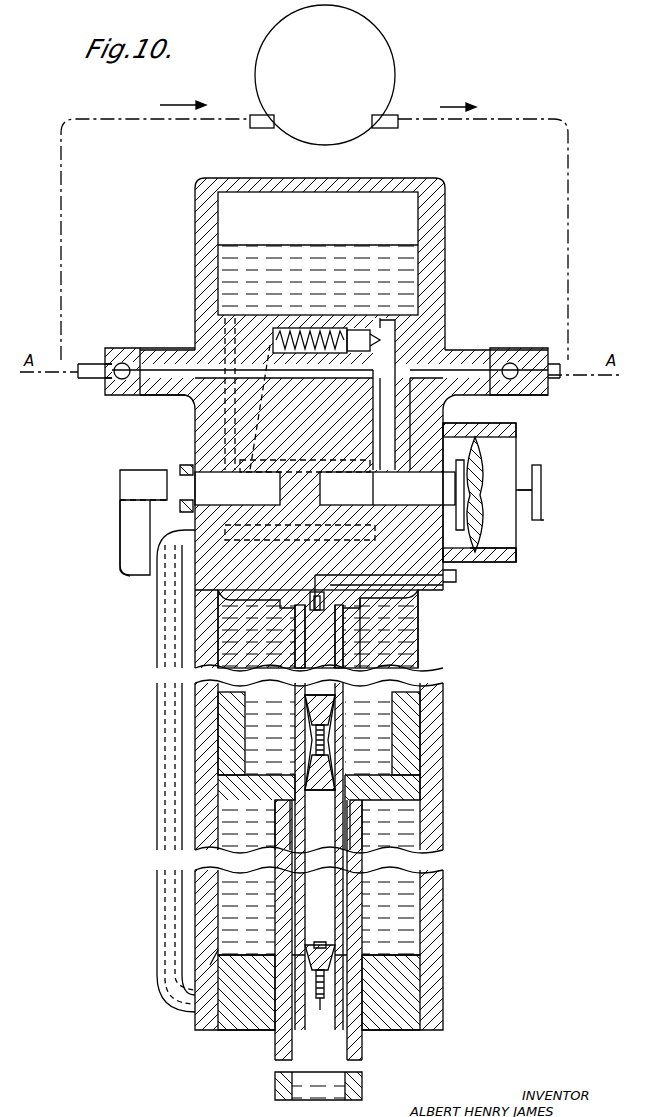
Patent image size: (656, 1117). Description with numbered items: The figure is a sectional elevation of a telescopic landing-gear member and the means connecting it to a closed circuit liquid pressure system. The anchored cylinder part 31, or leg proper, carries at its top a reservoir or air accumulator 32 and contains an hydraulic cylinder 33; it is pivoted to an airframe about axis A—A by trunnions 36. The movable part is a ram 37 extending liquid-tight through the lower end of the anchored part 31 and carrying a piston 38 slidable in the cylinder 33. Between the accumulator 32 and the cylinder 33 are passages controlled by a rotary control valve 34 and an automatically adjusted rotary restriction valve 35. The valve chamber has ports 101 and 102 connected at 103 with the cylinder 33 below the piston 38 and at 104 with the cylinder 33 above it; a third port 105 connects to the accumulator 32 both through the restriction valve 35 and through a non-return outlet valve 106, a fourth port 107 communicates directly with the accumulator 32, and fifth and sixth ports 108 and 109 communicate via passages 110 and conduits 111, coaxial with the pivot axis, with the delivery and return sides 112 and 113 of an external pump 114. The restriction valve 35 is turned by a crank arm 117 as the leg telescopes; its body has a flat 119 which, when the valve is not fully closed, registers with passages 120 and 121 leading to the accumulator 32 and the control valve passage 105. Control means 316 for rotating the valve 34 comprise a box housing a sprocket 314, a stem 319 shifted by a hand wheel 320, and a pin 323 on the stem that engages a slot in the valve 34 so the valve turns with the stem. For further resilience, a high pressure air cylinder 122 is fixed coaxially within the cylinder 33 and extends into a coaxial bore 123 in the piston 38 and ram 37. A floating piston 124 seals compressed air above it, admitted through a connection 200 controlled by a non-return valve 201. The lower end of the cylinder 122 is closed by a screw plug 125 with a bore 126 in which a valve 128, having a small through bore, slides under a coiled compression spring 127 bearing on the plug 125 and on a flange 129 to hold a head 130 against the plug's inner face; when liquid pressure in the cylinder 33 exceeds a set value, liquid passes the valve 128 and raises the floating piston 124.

The external pump 114 is at (368, 58).
The return side of the external pump 113 is at (250, 128).
The delivery side of the external pump 112 is at (388, 128).
The reservoir or air accumulator 32 is at (390, 216).
The trunnions 36 is at (170, 348).
The passages 110 is at (128, 362).
The conduits 111 is at (92, 364).
The non-return outlet valve 106 is at (350, 340).
The sixth port 109 is at (395, 380).
The passage 120 is at (222, 410).
The passage 121 is at (222, 438).
The third port 105 is at (322, 460).
The port 101 is at (335, 530).
The flat 119 is at (230, 488).
The fifth port 108 is at (387, 488).
The fourth port 107 is at (395, 472).
The rotary restriction valve 35 is at (195, 488).
The crank arm 117 is at (128, 532).
The non-return valve 201 is at (200, 612).
The rotary control valve 34 is at (476, 444).
The pin 323 is at (480, 460).
The stem 319 is at (541, 488).
The hand wheel 320 is at (541, 515).
The sprocket 314 is at (476, 535).
The box 316 is at (512, 556).
The connection 200 is at (456, 576).
The hydraulic cylinder 33 is at (395, 652).
The port 102 is at (368, 633).
The connection 104 is at (324, 600).
The high pressure air cylinder 122 is at (300, 638).
The anchored cylinder part 31 is at (443, 700).
The piston 38 is at (405, 735).
The coaxial bore 123 is at (280, 1045).
The floating piston 124 is at (312, 742).
The connection 103 is at (215, 955).
The coiled compression spring 127 is at (305, 1005).
The screw plug 125 is at (330, 960).
The bore 126 is at (326, 948).
The valve 128 is at (326, 985).
The flange 129 is at (324, 1000).
The head 130 is at (330, 940).
The ram 37 is at (362, 1082).